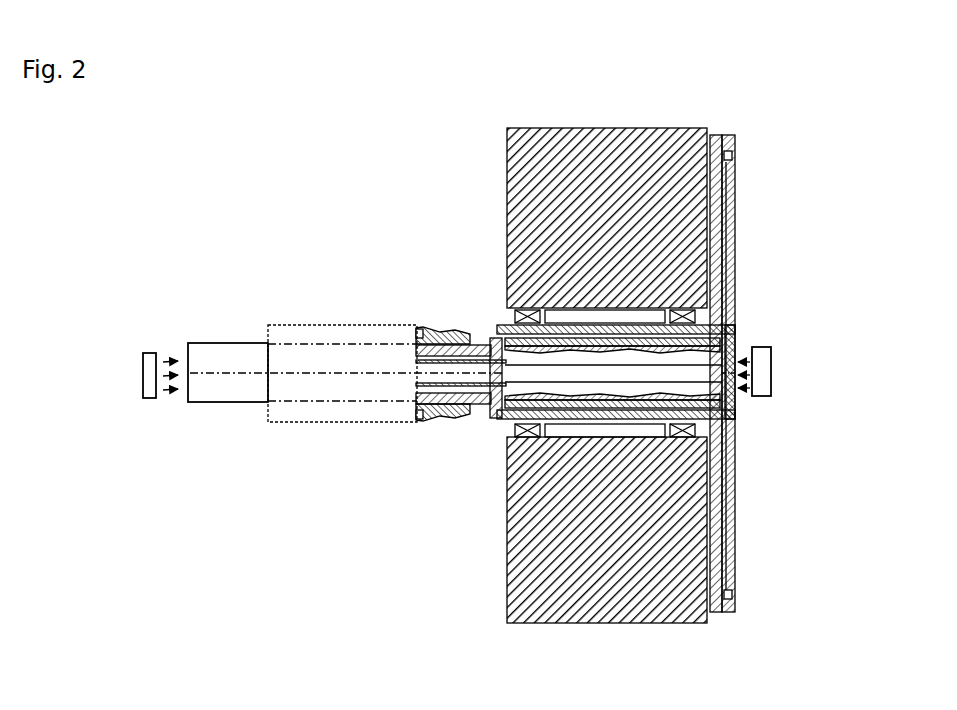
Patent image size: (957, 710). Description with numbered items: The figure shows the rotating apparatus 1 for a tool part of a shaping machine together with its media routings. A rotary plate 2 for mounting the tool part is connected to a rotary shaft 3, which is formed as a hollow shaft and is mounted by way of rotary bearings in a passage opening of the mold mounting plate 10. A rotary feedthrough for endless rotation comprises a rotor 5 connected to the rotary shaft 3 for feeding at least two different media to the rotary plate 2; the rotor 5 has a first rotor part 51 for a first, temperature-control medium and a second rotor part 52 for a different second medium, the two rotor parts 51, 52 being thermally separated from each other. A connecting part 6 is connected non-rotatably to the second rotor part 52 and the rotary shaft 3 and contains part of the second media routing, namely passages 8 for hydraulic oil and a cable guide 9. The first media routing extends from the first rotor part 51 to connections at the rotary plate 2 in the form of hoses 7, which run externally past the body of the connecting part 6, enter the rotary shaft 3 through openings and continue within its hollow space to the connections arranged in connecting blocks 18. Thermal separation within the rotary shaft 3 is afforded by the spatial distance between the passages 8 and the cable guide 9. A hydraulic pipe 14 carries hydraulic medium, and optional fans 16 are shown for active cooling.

The rotating apparatus 1 is at (325, 240).
The rotary plate 2 is at (715, 527).
The rotary shaft 3 is at (660, 324).
The rotor 5 is at (312, 455).
The connecting part 6 is at (453, 396).
The hose 7 is at (730, 418).
The passage 8 is at (497, 414).
The cable guide 9 is at (563, 372).
The mold mounting plate 10 is at (562, 165).
The hydraulic pipe 14 is at (722, 223).
The fan 16 is at (148, 372).
The connecting block 18 is at (731, 152).
The first rotor part 51 is at (345, 332).
The second rotor part 52 is at (213, 393).